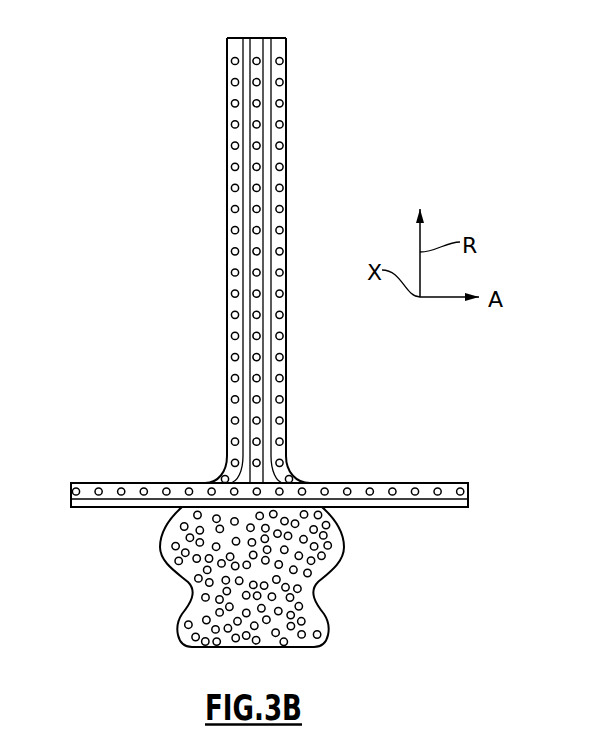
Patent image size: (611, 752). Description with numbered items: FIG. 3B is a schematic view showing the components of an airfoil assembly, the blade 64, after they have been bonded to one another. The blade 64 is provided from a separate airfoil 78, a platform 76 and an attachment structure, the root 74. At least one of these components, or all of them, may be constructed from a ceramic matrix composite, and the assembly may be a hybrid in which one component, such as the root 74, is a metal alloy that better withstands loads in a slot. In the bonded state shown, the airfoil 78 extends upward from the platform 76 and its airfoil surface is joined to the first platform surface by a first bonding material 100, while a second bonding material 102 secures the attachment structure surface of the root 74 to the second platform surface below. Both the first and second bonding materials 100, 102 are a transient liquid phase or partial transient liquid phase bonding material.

The blade 64 is at (366, 68).
The airfoil 78 is at (294, 387).
The first bonding material 100 is at (273, 472).
The platform 76 is at (475, 482).
The second bonding material 102 is at (188, 511).
The root 74 is at (349, 552).